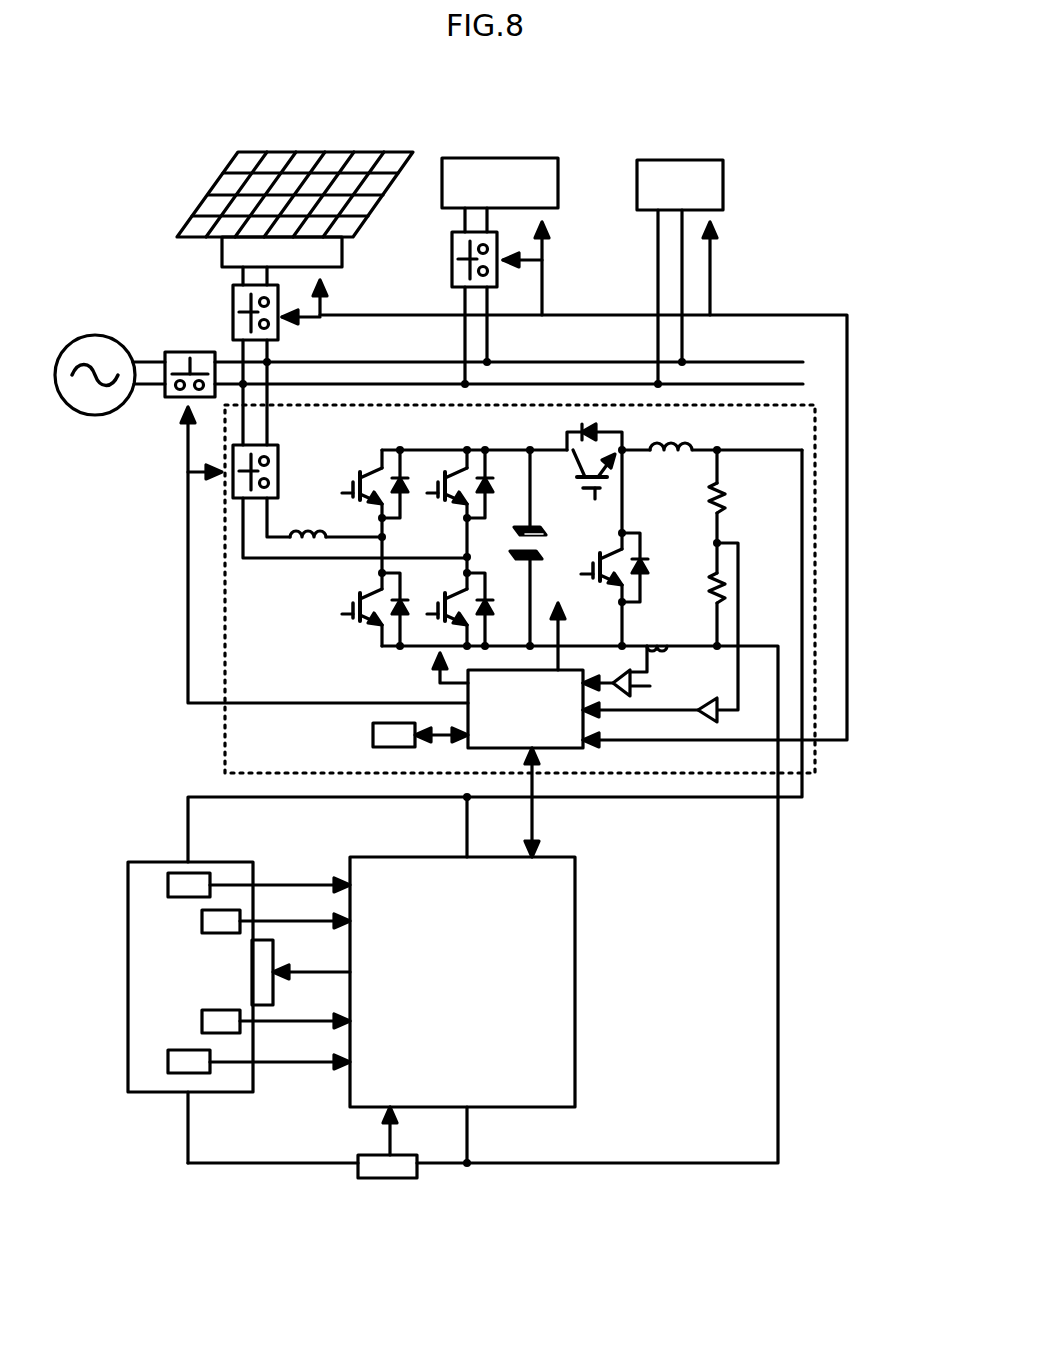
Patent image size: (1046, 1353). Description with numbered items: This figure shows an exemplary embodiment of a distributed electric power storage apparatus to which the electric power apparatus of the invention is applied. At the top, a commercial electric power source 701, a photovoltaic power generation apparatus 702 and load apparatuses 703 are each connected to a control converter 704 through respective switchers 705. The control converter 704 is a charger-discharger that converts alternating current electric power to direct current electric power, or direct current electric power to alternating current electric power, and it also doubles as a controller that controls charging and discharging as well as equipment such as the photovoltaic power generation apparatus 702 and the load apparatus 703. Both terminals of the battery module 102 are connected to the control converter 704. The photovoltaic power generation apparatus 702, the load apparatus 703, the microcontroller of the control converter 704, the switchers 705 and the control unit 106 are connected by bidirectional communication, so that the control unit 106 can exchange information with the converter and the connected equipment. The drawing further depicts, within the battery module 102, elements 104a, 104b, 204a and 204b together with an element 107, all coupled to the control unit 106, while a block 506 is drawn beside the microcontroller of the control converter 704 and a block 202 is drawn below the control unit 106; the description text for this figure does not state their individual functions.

The commercial electric power source 701 is at (93, 334).
The photovoltaic power generation apparatus 702 is at (250, 150).
The load apparatus 703 is at (483, 158).
The control converter 704 is at (224, 736).
The switcher 705 is at (177, 351).
The communication unit 506 is at (371, 736).
The battery module 102 is at (156, 1092).
The temperature sensor 104a is at (168, 894).
The temperature sensor 104b is at (169, 1055).
The humidity sensor 204a is at (212, 933).
The humidity sensor 204b is at (212, 1010).
The heater / actuator 107 is at (275, 950).
The control unit 106 is at (575, 972).
The power supply unit 202 is at (366, 1154).